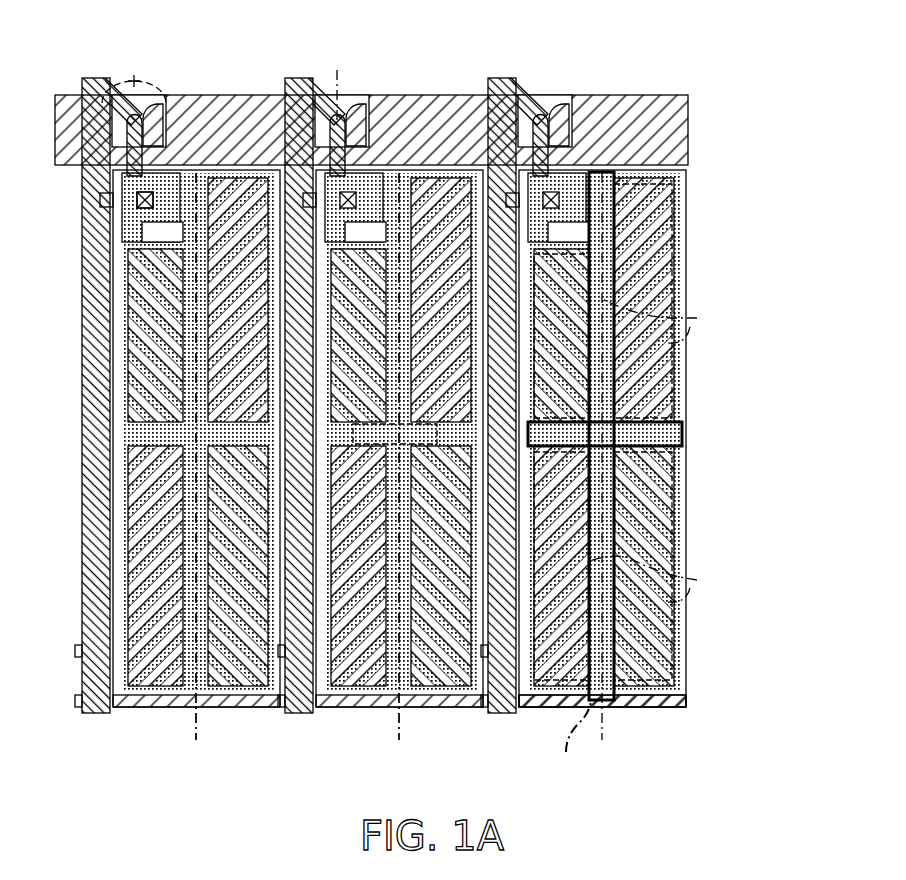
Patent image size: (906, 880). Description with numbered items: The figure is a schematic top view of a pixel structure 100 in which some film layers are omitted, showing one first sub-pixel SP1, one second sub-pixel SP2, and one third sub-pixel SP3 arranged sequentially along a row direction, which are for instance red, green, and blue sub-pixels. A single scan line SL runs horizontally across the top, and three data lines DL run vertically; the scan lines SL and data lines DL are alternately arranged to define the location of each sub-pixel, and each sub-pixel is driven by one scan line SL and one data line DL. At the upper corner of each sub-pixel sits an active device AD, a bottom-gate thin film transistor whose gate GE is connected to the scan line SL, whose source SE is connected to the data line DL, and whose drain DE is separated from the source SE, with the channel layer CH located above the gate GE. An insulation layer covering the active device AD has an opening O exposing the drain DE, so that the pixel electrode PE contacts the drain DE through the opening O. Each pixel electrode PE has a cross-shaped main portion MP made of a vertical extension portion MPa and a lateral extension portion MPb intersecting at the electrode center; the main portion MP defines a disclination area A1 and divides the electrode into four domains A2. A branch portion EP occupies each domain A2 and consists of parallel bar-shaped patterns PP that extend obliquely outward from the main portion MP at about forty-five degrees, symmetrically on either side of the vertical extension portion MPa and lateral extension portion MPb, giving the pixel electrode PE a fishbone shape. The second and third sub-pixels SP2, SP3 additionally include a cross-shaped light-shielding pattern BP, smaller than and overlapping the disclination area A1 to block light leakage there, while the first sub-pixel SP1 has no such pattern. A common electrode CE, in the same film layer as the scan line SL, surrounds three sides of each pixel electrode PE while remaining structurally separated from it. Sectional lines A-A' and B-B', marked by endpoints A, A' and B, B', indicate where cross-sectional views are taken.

The pixel structure 100 is at (764, 779).
The scan line SL is at (84, 164).
The data line DL is at (96, 78).
The gate GE is at (168, 136).
The source SE is at (150, 130).
The drain DE is at (166, 140).
The channel layer CH is at (148, 118).
The active device AD is at (120, 92).
The sectional line A-A' A is at (134, 76).
The sectional line B-B' B is at (336, 87).
The sectional line B- B' is at (401, 468).
The sectional line A- A' is at (198, 468).
The disclination area A1 is at (573, 739).
The domain A2 is at (658, 450).
The light-shielding pattern BP is at (396, 172).
The opening O is at (146, 212).
The first sub-pixel SP1 is at (249, 724).
The second sub-pixel SP2 is at (452, 724).
The third sub-pixel SP3 is at (637, 724).
The main portion MP is at (737, 388).
The vertical extension portion MPa is at (612, 386).
The lateral extension portion MPb is at (668, 437).
The branch portion EP is at (737, 468).
The bar-shaped pattern PP is at (652, 490).
The pixel electrode PE is at (773, 407).
The common electrode CE is at (690, 702).